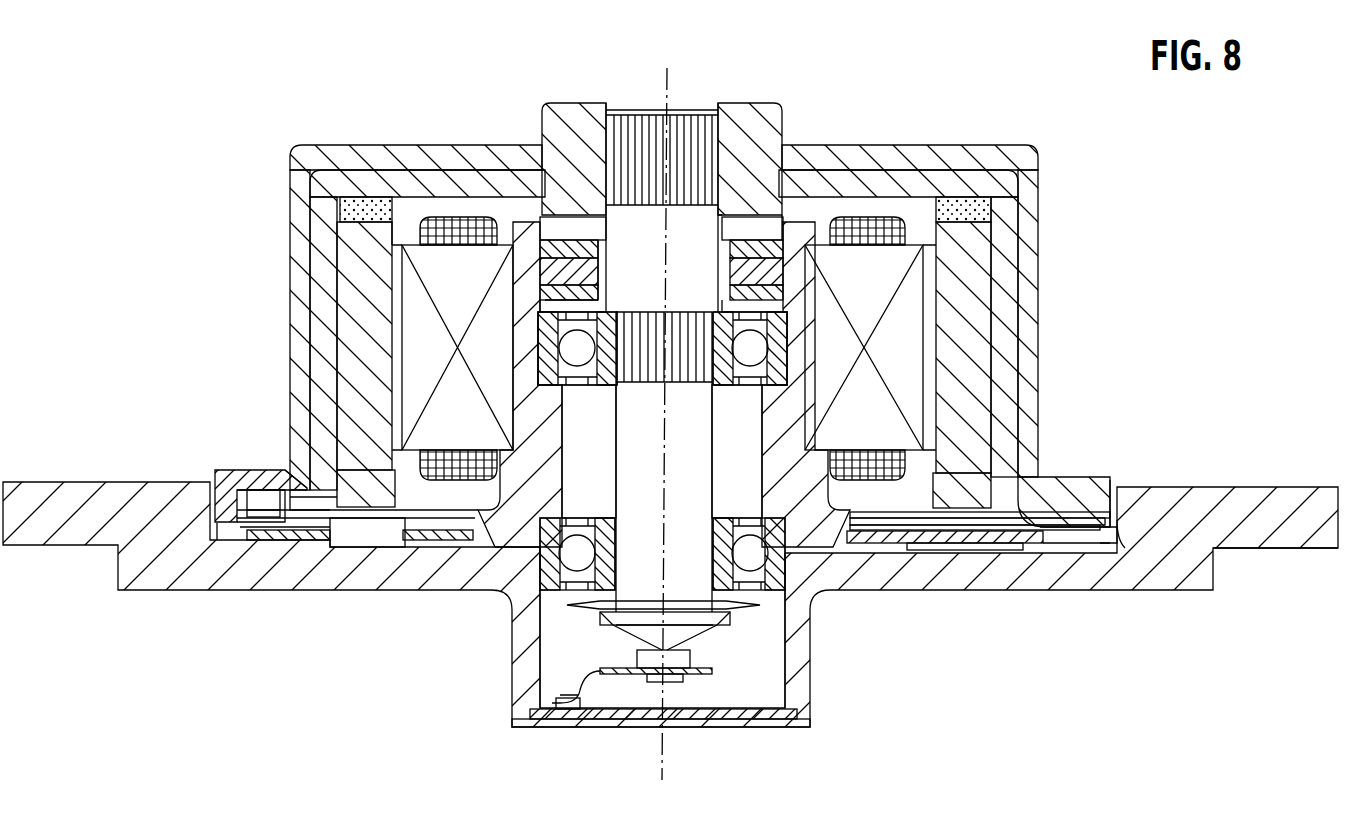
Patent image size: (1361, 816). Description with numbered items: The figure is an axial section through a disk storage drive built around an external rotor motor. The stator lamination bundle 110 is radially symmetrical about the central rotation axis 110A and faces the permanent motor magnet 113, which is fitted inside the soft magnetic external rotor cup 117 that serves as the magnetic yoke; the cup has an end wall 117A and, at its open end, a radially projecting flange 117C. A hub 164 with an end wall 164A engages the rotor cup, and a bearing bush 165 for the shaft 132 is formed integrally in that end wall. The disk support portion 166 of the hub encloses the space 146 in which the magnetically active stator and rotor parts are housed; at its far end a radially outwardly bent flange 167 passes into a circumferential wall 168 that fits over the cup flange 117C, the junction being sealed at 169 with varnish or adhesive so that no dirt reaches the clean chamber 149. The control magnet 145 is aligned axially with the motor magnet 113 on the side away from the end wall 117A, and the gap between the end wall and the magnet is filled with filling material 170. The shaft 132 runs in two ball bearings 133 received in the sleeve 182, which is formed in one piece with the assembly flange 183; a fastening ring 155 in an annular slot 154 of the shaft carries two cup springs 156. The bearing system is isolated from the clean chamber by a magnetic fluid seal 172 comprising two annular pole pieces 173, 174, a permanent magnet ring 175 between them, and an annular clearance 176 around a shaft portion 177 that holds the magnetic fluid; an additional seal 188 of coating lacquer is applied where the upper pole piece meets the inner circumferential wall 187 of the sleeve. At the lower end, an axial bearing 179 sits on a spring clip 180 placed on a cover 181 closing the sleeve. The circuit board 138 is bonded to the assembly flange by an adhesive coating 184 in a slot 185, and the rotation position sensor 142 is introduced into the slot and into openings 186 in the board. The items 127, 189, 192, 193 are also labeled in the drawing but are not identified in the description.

The stator lamination bundle 110 is at (410, 375).
The central rotation axis 110A is at (663, 745).
The motor magnet 113 is at (347, 248).
The external rotor cup 117 is at (320, 297).
The end wall of external rotor cup 117A is at (852, 183).
The flange of external rotor cup 117C is at (1005, 552).
The coil 127 is at (885, 243).
The shaft 132 is at (632, 473).
The ball bearing 133 is at (600, 381).
The circuit board 138 is at (278, 548).
The rotation position sensor 142 is at (368, 548).
The control magnet 145 is at (880, 520).
The space surrounded by disk mounting portion 146 is at (410, 212).
The clean chamber 149 is at (186, 207).
The annular slot 154 is at (600, 618).
The fastening ring 155 is at (722, 624).
The cup springs 156 is at (598, 610).
The hub 164 is at (1035, 190).
The end wall of hub 164A is at (306, 152).
The bearing bush 165 is at (778, 130).
The disk support portion 166 is at (1032, 358).
The radially outwardly bent flange 167 is at (1048, 480).
The circumferential wall 168 is at (1100, 492).
The seal 169 is at (1070, 530).
The filling material 170 is at (962, 210).
The magnetic fluid seal 172 is at (602, 262).
The upper annular pole piece 173 is at (540, 258).
The annular pole piece 174 is at (545, 290).
The permanent magnet ring 175 is at (590, 295).
The annular clearance 176 is at (585, 275).
The shaft portion 177 is at (657, 212).
The axial bearing 179 is at (705, 652).
The spring clip 180 is at (603, 708).
The cover 181 is at (782, 728).
The sleeve 182 is at (806, 680).
The assembly flange 183 is at (1312, 541).
The adhesive coating 184 is at (998, 545).
The slot 185 is at (935, 532).
The openings 186 is at (415, 546).
The inner circumferential wall of sleeve 187 is at (742, 214).
The additional seal 188 is at (560, 232).
The screw 189 is at (1110, 535).
The mounting surface 192 is at (1128, 522).
The base plate 193 is at (1236, 487).